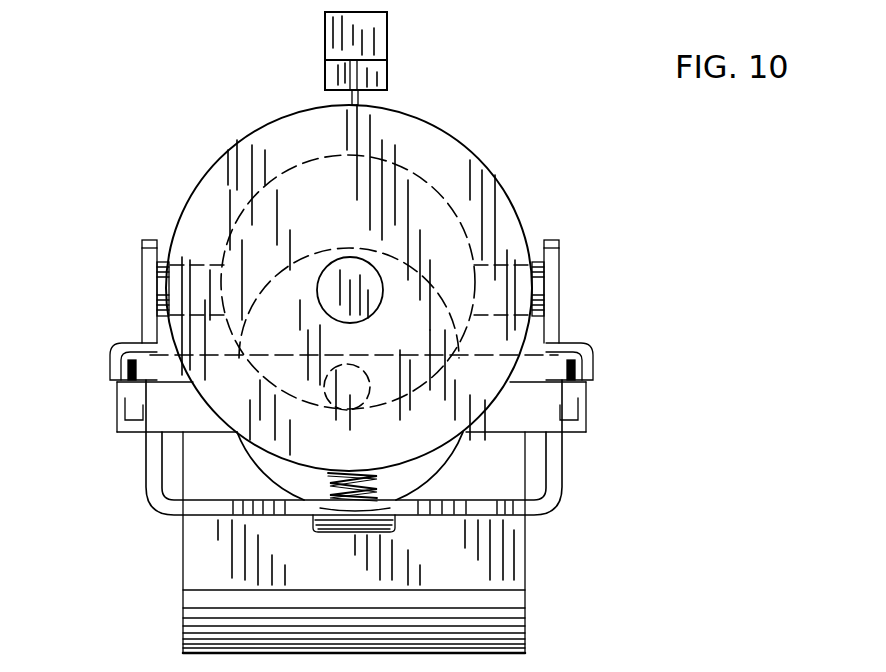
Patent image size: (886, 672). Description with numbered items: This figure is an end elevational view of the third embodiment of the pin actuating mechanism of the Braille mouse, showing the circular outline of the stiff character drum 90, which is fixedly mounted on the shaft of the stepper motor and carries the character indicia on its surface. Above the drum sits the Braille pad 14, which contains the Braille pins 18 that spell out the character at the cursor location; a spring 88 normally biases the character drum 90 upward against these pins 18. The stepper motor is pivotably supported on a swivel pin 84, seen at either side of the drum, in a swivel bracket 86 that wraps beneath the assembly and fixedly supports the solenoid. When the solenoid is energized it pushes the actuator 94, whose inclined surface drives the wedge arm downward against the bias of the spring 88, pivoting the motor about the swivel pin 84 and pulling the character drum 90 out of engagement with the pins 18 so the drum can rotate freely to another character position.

The Braille pad 14 is at (387, 50).
The Braille pins 18 is at (347, 100).
The character drum 90 is at (448, 132).
The swivel pin 84 is at (163, 260).
The actuator 94 is at (127, 378).
The swivel bracket 86 is at (150, 480).
The spring 88 is at (367, 470).